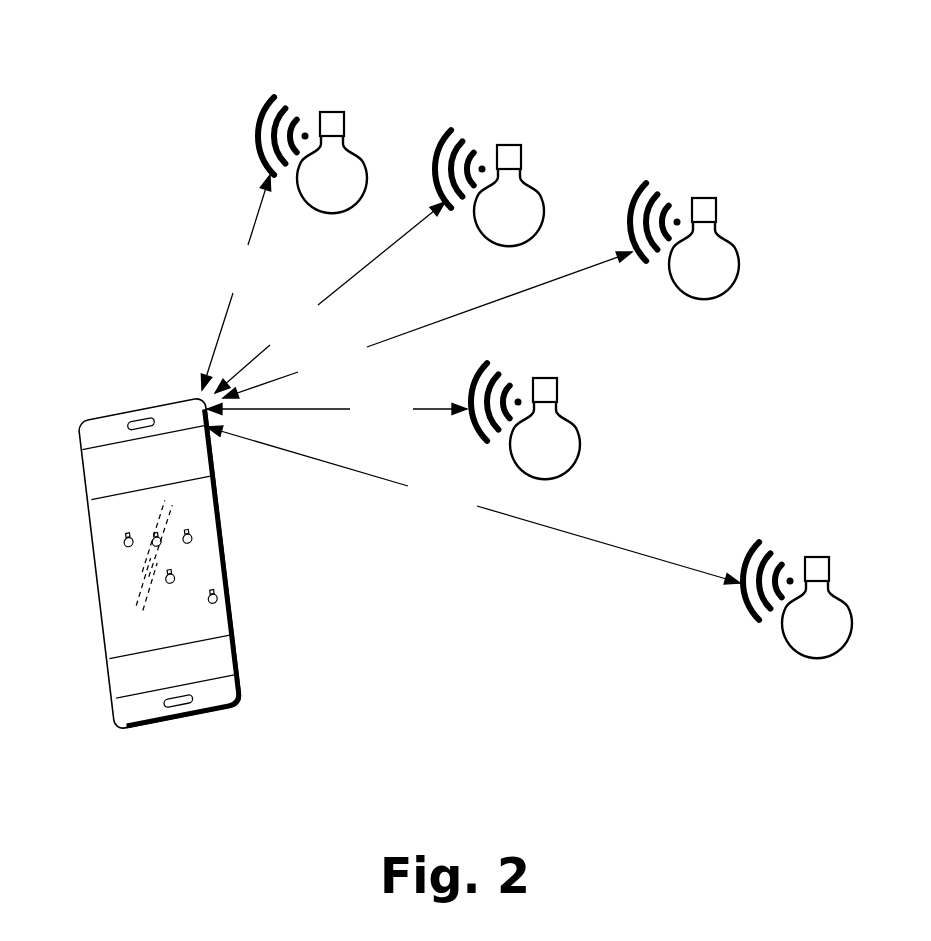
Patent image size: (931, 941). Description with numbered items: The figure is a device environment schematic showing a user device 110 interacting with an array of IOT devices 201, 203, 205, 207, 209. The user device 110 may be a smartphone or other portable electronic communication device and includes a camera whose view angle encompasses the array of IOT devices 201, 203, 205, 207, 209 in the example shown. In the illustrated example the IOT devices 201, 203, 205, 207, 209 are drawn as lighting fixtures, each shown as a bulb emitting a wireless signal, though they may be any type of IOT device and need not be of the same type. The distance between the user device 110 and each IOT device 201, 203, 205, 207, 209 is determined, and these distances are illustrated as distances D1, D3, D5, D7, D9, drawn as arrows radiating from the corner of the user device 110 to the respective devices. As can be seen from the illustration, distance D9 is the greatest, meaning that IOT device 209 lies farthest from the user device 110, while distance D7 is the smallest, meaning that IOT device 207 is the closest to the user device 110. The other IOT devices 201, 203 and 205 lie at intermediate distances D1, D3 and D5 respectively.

The user device 110 is at (115, 415).
The IOT device 201 is at (337, 120).
The IOT device 203 is at (510, 155).
The IOT device 205 is at (703, 208).
The IOT device 207 is at (555, 378).
The IOT device 209 is at (803, 557).
The distance D1 is at (235, 282).
The distance D3 is at (330, 297).
The distance D5 is at (427, 325).
The distance D7 is at (337, 408).
The distance D9 is at (473, 505).